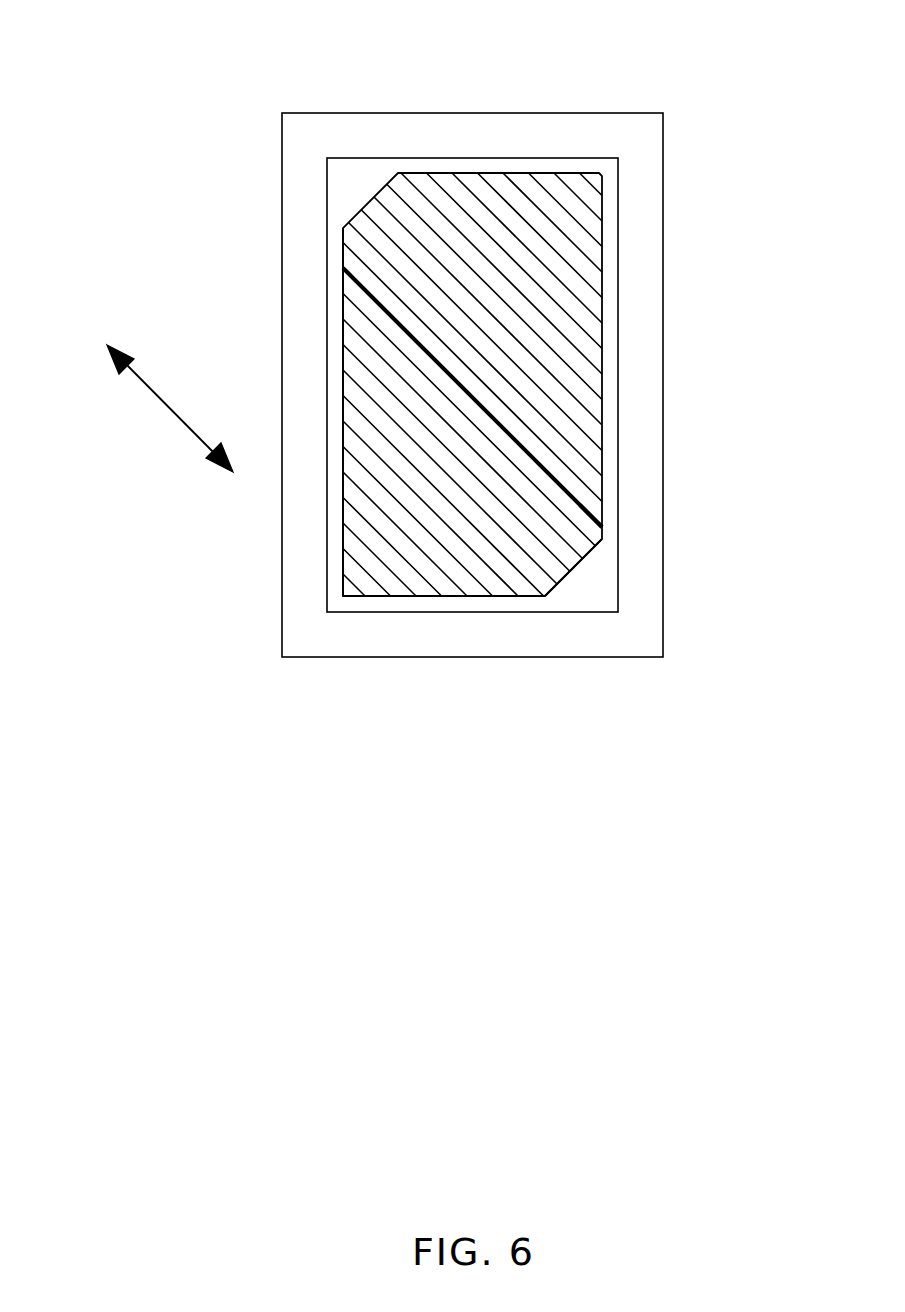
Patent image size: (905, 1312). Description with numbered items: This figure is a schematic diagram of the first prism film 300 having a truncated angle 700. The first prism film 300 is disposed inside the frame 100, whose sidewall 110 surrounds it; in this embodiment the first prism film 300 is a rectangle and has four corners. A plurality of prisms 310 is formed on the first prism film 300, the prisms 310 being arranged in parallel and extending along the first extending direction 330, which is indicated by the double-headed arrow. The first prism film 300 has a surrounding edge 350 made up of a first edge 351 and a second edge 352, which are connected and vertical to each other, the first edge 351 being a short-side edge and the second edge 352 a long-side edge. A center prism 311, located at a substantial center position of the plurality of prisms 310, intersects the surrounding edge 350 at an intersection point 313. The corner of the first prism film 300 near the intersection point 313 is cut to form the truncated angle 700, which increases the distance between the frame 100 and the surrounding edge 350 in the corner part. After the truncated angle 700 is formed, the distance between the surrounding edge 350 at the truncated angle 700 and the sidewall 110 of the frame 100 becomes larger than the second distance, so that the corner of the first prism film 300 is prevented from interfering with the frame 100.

The frame 100 is at (295, 609).
The sidewall 110 is at (327, 529).
The first prism film 300 is at (353, 389).
The prisms 310 is at (505, 200).
The center prism 311 is at (513, 433).
The intersection point 313 is at (601, 525).
The first extending direction 330 is at (170, 408).
The surrounding edge 350 is at (383, 299).
The first edge 351 is at (433, 173).
The second edge 352 is at (343, 285).
The truncated angle 700 is at (573, 567).